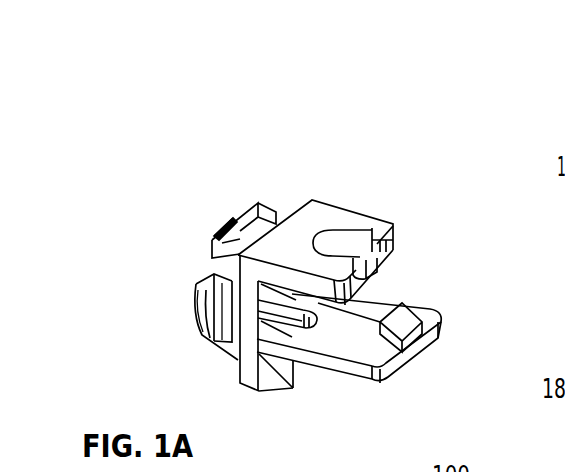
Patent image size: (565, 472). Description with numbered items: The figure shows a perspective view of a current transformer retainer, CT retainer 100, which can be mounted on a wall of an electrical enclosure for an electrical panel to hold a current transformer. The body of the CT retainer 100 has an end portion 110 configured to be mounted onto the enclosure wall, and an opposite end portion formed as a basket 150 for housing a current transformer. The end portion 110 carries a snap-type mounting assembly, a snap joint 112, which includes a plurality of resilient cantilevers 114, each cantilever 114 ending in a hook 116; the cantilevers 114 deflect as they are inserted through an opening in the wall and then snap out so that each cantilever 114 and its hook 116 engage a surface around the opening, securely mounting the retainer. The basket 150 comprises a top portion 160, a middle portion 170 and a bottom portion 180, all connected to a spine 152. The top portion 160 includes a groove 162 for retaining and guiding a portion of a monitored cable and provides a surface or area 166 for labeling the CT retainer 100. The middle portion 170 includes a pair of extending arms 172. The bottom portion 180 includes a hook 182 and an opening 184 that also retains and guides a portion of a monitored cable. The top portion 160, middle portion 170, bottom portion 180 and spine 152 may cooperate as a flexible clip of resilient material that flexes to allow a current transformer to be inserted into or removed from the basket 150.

The CT retainer 100 is at (467, 130).
The end portion 110 is at (269, 131).
The snap joint 112 is at (218, 210).
The resilient cantilever 114 is at (225, 320).
The hook 116 is at (196, 303).
The basket 150 is at (445, 131).
The spine 152 is at (248, 268).
The top portion 160 is at (319, 200).
The groove 162 is at (379, 233).
The surface or area for labeling 166 is at (216, 230).
The middle portion 170 is at (386, 252).
The extending arm 172 is at (386, 266).
The bottom portion 180 is at (314, 360).
The hook 182 is at (406, 319).
The opening 184 is at (367, 346).